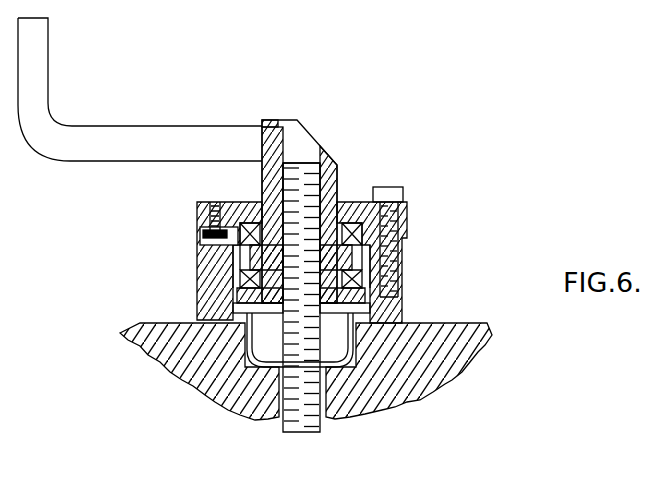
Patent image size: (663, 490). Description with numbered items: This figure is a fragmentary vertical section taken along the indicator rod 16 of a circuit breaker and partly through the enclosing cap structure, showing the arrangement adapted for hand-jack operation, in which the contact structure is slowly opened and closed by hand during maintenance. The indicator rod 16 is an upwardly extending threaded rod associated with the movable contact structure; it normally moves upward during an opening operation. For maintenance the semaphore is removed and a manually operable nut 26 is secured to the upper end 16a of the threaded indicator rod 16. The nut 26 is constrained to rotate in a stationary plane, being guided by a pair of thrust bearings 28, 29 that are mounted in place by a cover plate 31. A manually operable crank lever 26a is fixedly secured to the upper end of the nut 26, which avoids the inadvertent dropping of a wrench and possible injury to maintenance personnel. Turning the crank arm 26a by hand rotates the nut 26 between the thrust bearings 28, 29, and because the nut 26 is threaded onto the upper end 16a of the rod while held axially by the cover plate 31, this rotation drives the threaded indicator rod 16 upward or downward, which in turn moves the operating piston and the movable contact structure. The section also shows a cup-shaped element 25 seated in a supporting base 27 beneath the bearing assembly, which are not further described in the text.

The indicator rod 16 is at (297, 433).
The upper end of the threaded indicator rod 16a is at (295, 187).
The cup 25 is at (353, 313).
The manually operable nut 26 is at (333, 160).
The crank lever 26a is at (38, 70).
The base 27 is at (440, 323).
The thrust bearing 28 is at (233, 246).
The thrust bearing 29 is at (245, 278).
The cover plate 31 is at (407, 209).